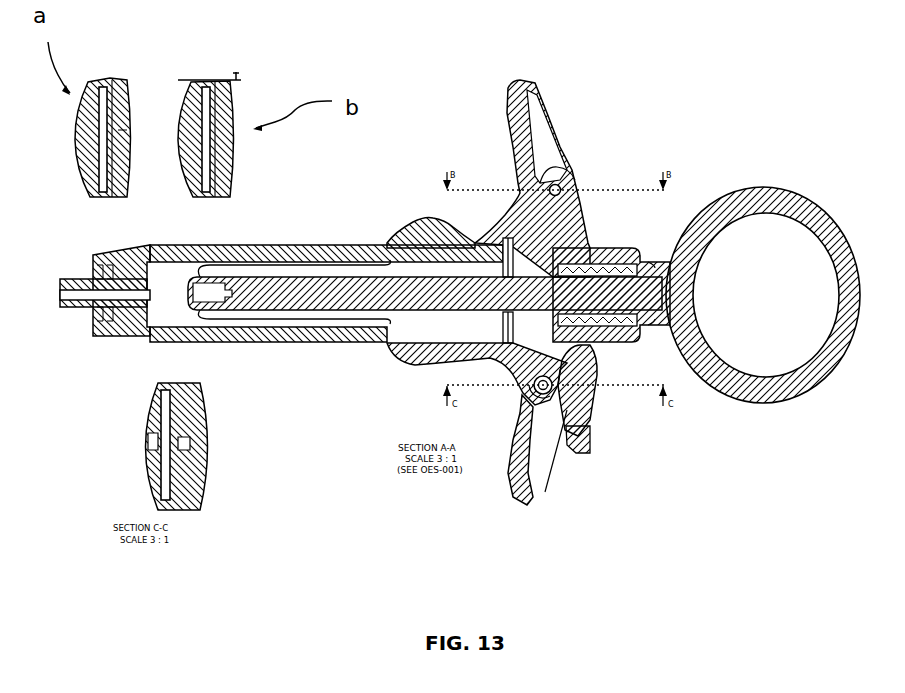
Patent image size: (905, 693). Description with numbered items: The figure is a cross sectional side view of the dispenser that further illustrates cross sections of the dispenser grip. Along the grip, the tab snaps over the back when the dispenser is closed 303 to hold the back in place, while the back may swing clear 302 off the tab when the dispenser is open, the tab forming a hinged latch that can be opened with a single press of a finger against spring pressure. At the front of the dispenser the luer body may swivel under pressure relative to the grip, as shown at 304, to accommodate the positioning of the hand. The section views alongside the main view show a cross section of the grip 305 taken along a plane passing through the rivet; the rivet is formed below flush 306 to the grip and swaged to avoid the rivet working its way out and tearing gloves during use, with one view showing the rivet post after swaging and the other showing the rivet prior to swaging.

The back swinging clear of the tab 302 is at (565, 363).
The tab snapped over the back when closed 303 is at (593, 373).
The luer body swivel 304 is at (410, 243).
The cross section of the grip 305 is at (197, 102).
The rivet formed below flush 306 is at (452, 277).